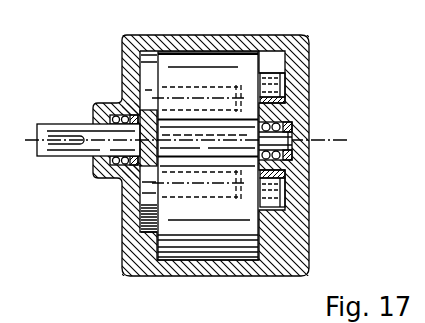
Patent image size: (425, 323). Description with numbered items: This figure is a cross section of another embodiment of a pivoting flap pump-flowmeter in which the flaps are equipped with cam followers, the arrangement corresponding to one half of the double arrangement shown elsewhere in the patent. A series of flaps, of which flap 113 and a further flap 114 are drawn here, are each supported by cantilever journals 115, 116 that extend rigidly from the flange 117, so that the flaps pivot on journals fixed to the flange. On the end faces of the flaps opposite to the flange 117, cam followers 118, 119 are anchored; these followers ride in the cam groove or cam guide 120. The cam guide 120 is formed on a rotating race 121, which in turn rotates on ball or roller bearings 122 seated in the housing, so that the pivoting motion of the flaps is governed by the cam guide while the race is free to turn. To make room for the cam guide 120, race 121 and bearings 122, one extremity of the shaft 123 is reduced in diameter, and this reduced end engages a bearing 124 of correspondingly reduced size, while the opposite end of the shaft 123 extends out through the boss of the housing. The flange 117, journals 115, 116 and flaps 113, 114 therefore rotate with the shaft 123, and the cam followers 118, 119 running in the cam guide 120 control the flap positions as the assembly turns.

The flap 113 is at (192, 75).
The rotor 114 is at (200, 213).
The cantilever journal 115 is at (153, 100).
The cantilever journal 116 is at (150, 221).
The flange 117 is at (148, 177).
The cam follower 118 is at (262, 84).
The cam follower 119 is at (289, 198).
The cam groove or cam guide 120 is at (275, 72).
The rotating race 121 is at (284, 100).
The ball or roller bearings 122 is at (287, 170).
The shaft 123 is at (92, 137).
The bearing of reduced size 124 is at (290, 113).